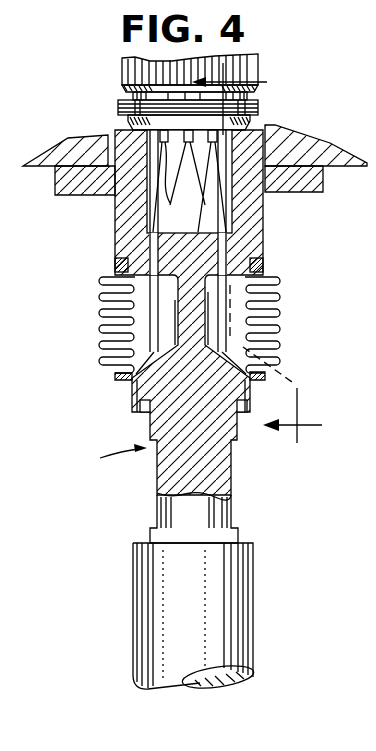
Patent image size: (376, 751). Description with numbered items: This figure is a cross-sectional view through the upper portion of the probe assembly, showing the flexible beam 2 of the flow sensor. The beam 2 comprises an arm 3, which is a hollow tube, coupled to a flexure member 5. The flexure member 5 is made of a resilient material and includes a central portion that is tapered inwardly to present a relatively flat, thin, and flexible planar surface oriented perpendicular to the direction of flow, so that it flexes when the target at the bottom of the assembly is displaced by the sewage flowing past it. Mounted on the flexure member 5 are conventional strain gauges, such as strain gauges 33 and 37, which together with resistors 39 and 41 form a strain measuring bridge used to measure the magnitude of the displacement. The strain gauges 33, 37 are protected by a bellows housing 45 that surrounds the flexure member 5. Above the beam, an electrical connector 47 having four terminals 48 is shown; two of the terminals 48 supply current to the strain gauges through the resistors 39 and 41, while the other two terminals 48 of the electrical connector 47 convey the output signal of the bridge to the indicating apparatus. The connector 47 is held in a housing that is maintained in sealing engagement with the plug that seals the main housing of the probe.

The flexible beam 2 is at (231, 592).
The arm 3 is at (240, 648).
The flexure member 5 is at (214, 268).
The strain gauge 33 is at (247, 291).
The strain gauge 37 is at (173, 312).
The resistor 39 is at (245, 359).
The resistor 41 is at (155, 367).
The bellows housing 45 is at (205, 312).
The electrical connector 47 is at (137, 106).
The terminals 48 is at (189, 181).